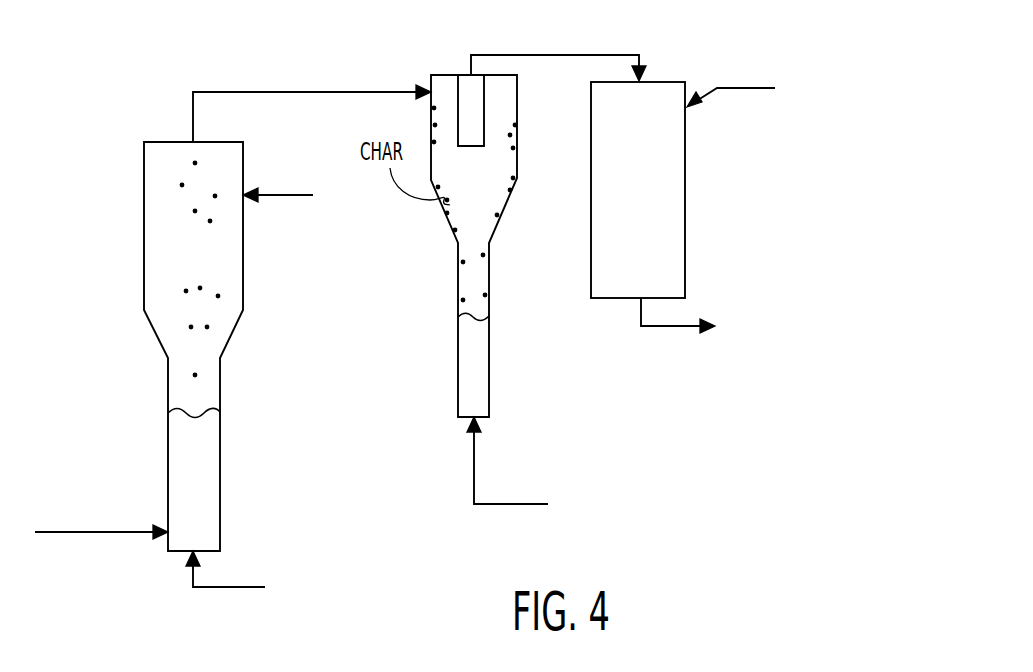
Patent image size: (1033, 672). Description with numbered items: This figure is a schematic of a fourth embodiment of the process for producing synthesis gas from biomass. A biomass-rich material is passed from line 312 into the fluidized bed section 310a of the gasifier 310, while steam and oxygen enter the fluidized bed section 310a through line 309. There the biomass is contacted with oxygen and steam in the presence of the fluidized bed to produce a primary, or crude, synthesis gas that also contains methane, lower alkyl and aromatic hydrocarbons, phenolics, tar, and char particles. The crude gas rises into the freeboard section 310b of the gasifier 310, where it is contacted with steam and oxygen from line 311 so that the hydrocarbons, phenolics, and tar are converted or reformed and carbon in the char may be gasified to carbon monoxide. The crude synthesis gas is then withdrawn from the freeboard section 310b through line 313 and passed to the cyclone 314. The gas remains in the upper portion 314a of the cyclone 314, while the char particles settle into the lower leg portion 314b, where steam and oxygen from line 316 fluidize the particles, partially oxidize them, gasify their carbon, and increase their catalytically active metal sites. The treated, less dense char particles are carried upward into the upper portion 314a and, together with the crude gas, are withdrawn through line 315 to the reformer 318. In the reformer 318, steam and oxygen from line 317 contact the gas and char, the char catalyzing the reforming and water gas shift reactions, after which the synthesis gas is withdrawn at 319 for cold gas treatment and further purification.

The line 309 is at (215, 588).
The gasifier 310 is at (112, 272).
The fluidized bed section 310a is at (178, 440).
The freeboard section 310b is at (150, 158).
The line 311 is at (283, 198).
The line 312 is at (105, 530).
The line 313 is at (212, 92).
The cyclone 314 is at (580, 208).
The upper portion 314a is at (470, 242).
The leg portion 314b is at (483, 364).
The line 315 is at (520, 55).
The line 316 is at (498, 506).
The line 317 is at (706, 88).
The reformer 318 is at (685, 222).
The reformer outlet 319 is at (676, 328).